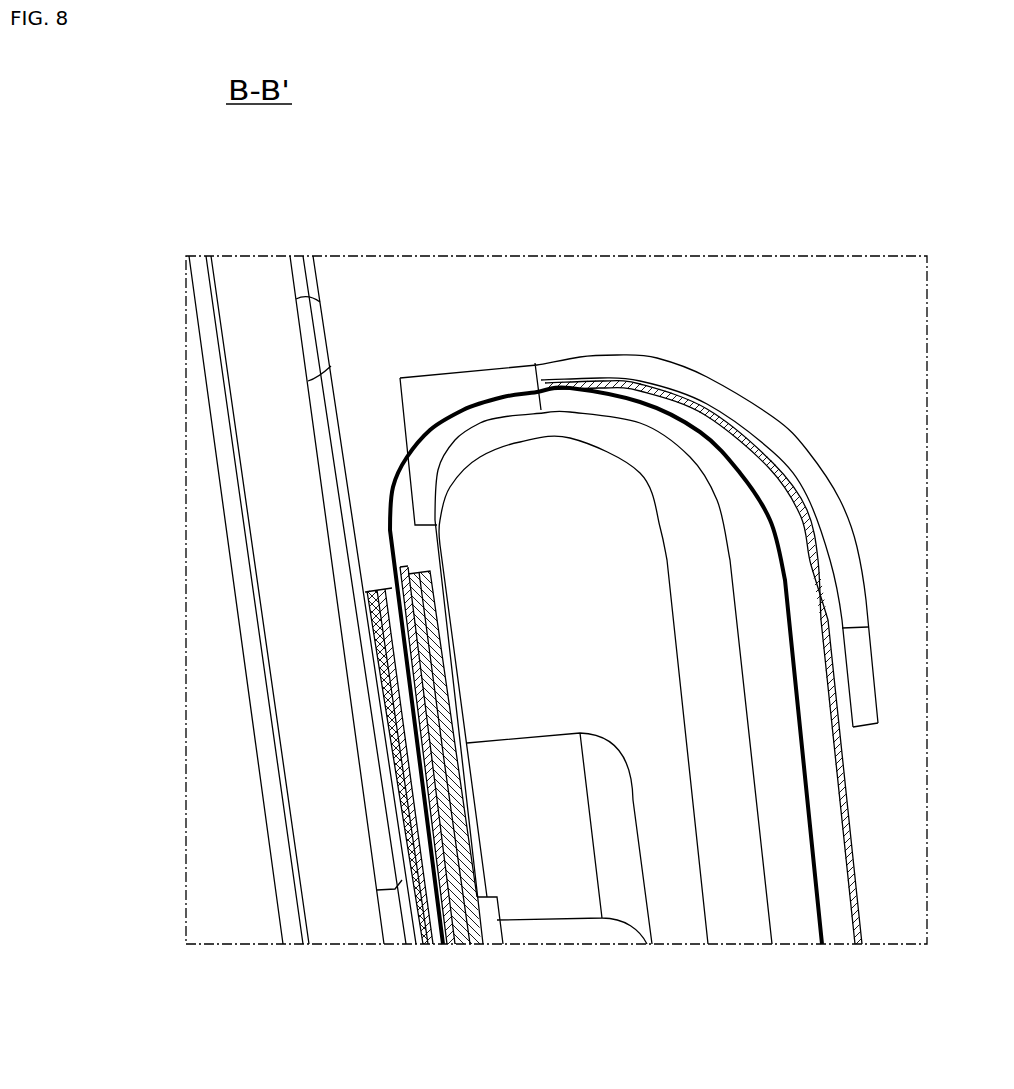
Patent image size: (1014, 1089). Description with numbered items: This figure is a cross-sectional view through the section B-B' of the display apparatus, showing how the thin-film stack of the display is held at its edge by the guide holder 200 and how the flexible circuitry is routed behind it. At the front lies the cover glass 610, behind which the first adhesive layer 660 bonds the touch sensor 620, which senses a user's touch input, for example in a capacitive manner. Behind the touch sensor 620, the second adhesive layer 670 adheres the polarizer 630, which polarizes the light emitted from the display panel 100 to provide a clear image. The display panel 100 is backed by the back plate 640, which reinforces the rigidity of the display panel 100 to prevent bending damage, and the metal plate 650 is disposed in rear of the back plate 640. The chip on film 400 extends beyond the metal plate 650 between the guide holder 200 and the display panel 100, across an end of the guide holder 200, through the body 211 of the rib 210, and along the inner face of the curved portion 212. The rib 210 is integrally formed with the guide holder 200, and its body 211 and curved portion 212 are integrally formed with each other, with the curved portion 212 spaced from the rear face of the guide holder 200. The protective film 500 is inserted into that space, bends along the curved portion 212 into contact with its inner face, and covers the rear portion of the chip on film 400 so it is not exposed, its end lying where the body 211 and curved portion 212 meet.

The display panel 100 is at (433, 782).
The guide holder 200 is at (673, 890).
The rib 210 is at (633, 157).
The body 211 is at (468, 393).
The curved portion 212 is at (640, 370).
The chip on film 400 is at (393, 536).
The protective film 500 is at (848, 867).
The cover glass 610 is at (253, 326).
The touch sensor 620 is at (390, 656).
The polarizer 630 is at (430, 757).
The back plate 640 is at (437, 808).
The metal plate 650 is at (407, 853).
The first adhesive layer 660 is at (372, 617).
The second adhesive layer 670 is at (400, 688).